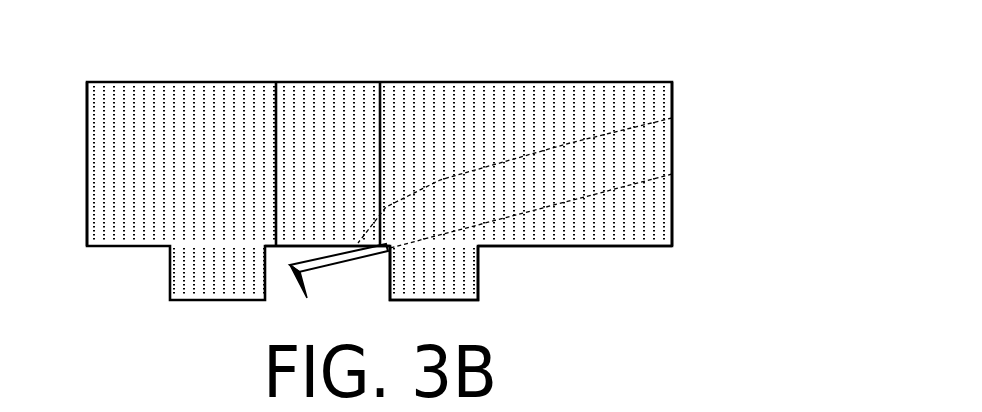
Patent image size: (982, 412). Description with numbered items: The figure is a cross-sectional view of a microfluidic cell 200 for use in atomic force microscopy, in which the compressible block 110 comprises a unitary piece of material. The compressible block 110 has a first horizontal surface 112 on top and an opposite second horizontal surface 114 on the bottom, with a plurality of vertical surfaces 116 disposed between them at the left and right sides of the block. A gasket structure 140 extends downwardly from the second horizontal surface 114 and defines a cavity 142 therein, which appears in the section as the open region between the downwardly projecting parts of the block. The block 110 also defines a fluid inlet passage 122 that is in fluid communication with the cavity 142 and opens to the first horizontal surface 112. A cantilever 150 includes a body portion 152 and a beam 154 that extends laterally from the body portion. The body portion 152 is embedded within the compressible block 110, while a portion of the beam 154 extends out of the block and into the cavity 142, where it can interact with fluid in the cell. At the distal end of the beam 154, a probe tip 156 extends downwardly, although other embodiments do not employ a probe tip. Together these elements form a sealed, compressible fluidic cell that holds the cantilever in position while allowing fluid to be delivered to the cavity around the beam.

The microfluidic cell 200 is at (682, 28).
The compressible block 110 is at (145, 71).
The first horizontal surface 112 is at (222, 81).
The second horizontal surface 114 is at (577, 248).
The vertical surfaces 116 is at (88, 100).
The fluid inlet passage 122 is at (327, 110).
The gasket structure 140 is at (480, 258).
The cavity 142 is at (358, 285).
The cantilever 150 is at (495, 174).
The body portion 152 is at (440, 192).
The beam 154 is at (334, 262).
The probe tip 156 is at (298, 282).